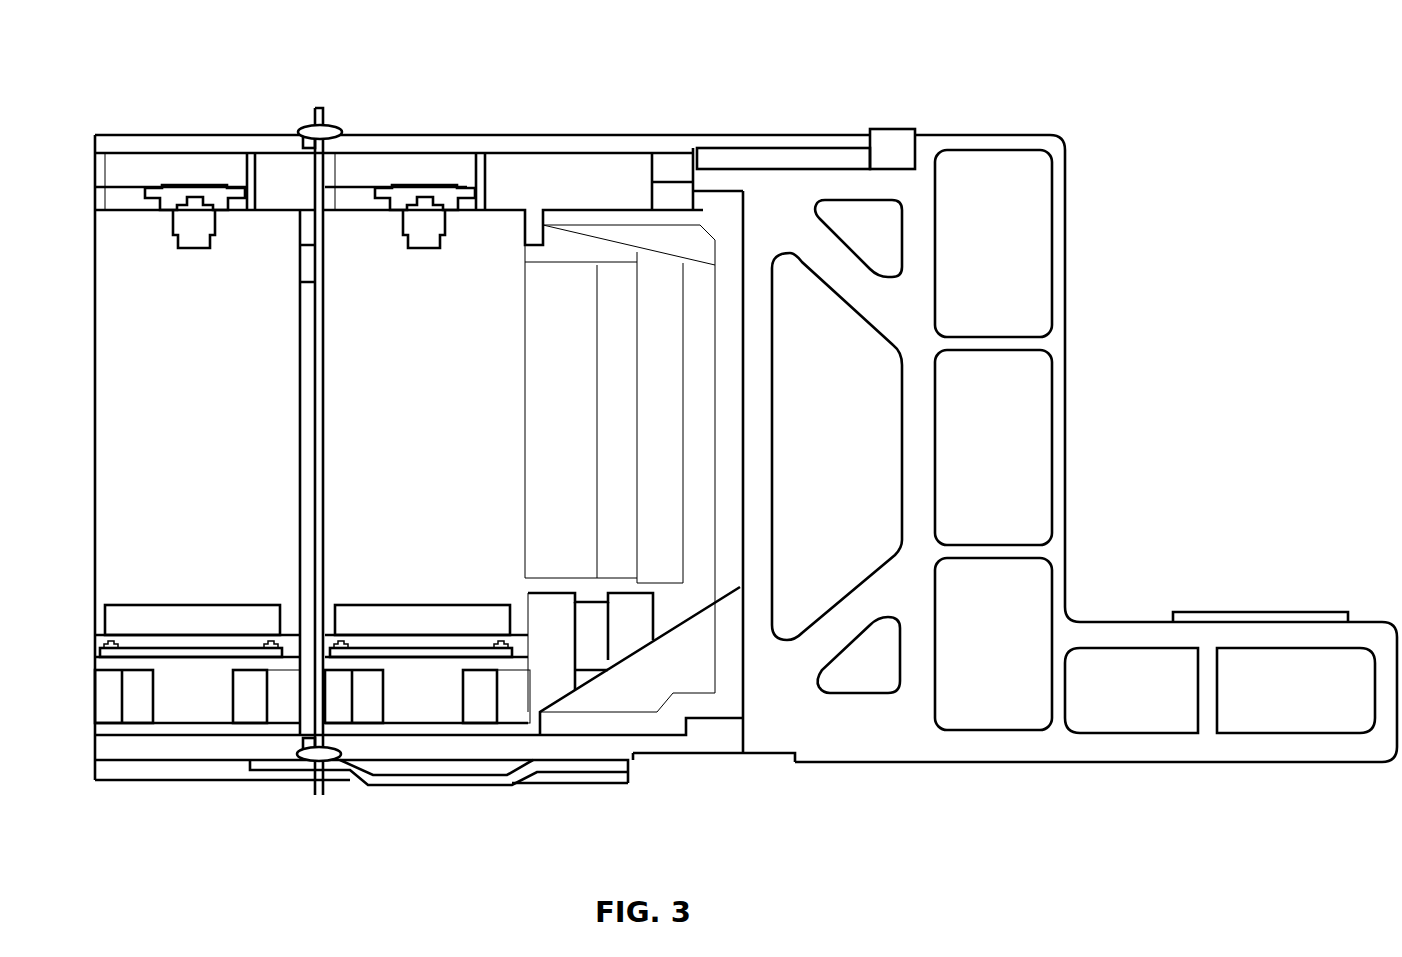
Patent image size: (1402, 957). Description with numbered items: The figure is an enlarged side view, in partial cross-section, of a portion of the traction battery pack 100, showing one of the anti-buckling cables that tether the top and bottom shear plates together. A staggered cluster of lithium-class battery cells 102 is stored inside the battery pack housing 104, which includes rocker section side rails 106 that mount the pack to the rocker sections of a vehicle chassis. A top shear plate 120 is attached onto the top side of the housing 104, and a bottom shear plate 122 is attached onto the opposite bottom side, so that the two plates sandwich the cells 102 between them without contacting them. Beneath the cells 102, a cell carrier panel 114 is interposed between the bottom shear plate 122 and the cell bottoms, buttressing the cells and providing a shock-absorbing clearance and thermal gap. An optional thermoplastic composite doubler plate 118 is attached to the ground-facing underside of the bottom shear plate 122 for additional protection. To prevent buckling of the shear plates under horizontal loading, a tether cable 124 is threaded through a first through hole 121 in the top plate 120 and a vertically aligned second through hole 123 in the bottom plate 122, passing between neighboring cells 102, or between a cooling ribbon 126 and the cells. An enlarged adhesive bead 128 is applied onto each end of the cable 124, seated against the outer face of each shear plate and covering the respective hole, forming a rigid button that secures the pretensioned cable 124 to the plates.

The traction battery pack 100 is at (176, 48).
The battery cells 102 is at (128, 208).
The battery pack housing 104 is at (1005, 110).
The rocker section side rail 106 is at (1068, 184).
The cell carrier panel 114 is at (197, 736).
The thermoplastic composite doubler plate 118 is at (153, 781).
The top shear plate 120 is at (563, 138).
The first through hole 121 is at (300, 145).
The bottom shear plate 122 is at (113, 762).
The second through hole 123 is at (302, 744).
The tether cable 124 is at (315, 370).
The cooling ribbon 126 is at (634, 152).
The adhesive bead 128 is at (338, 128).